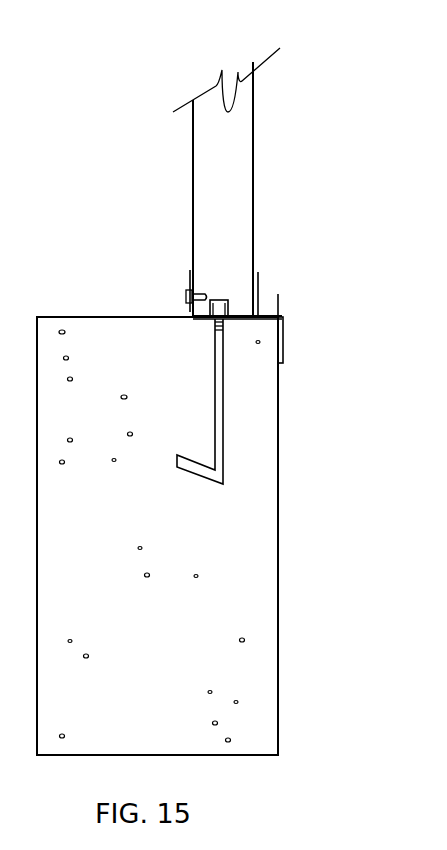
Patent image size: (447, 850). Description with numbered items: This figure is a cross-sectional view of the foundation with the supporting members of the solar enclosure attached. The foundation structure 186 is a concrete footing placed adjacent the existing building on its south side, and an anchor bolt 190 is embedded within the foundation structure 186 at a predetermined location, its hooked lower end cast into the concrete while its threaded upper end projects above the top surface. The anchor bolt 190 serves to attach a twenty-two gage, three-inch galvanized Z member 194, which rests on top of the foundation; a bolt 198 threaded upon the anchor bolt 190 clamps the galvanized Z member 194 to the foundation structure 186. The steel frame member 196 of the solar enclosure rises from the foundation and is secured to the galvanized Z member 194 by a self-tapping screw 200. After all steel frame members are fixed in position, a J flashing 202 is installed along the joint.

The foundation structure 186 is at (280, 583).
The anchor bolt 190 is at (225, 468).
The galvanized Z member 194 is at (281, 348).
The steel frame member 196 is at (256, 175).
The bolt 198 is at (224, 300).
The self-tapping screw 200 is at (186, 296).
The J flashing 202 is at (278, 296).